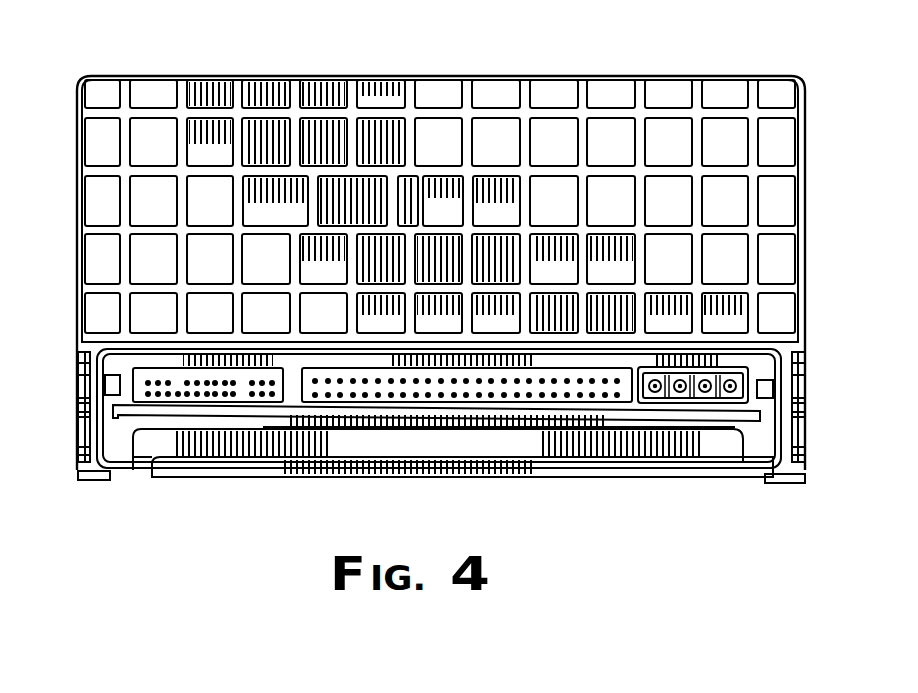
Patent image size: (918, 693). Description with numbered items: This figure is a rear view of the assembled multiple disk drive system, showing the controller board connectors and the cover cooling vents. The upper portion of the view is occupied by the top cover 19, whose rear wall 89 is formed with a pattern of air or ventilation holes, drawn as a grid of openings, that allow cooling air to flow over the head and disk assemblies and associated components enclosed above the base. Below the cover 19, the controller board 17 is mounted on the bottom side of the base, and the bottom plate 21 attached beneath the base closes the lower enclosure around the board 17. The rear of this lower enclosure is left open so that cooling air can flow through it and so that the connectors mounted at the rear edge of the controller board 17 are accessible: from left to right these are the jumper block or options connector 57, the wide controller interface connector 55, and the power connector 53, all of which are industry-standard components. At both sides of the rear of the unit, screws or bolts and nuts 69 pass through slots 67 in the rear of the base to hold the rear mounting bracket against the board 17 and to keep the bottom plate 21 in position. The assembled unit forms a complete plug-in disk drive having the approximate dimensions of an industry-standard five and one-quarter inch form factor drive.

The top cover 19 is at (461, 247).
The rear wall 89 is at (735, 197).
The bottom plate 21 is at (404, 482).
The controller board 17 is at (613, 413).
The jumper block or options connector 57 is at (233, 400).
The controller interface connector 55 is at (525, 398).
The power connector 53 is at (712, 400).
The screws or bolts and nuts 69 is at (76, 436).
The slots 67 is at (80, 479).